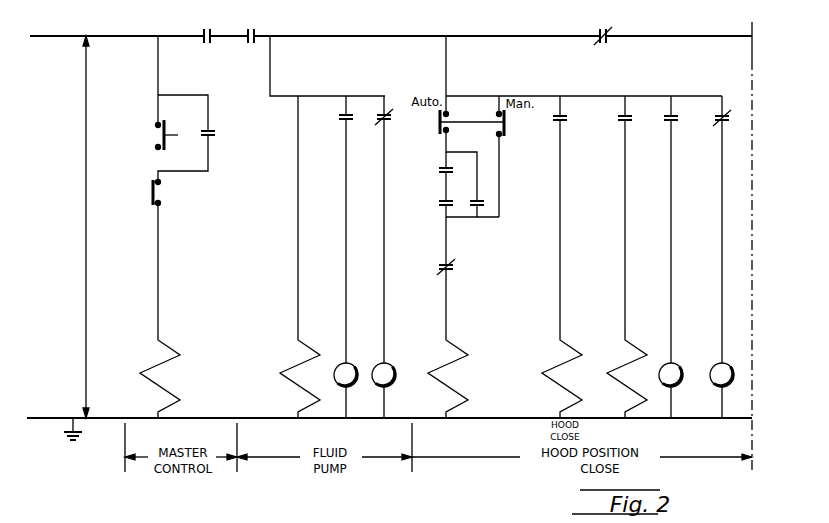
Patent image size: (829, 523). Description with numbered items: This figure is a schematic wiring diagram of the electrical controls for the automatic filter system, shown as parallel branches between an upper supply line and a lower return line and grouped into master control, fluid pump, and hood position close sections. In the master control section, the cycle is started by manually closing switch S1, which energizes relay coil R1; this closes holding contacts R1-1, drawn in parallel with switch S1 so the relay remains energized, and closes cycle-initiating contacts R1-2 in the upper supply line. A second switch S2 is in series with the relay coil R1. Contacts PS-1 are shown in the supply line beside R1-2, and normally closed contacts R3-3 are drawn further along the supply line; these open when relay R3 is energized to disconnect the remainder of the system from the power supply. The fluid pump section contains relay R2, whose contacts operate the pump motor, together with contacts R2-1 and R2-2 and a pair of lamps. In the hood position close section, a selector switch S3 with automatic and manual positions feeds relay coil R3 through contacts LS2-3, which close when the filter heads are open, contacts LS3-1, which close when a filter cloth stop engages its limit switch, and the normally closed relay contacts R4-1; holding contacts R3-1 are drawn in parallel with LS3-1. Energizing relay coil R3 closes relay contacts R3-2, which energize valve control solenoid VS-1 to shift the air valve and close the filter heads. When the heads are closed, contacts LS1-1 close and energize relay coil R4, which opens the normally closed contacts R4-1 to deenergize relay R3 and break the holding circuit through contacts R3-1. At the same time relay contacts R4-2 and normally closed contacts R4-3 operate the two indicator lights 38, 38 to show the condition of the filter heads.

The cycle-initiating contacts R1-2 is at (194, 28).
The pressure switch contact PS-1 is at (267, 28).
The normally closed contacts R3-3 is at (619, 29).
The switch S1 is at (156, 135).
The holding contacts R1-1 is at (225, 133).
The stop switch S2 is at (142, 193).
The relay coil R1 is at (161, 374).
The relay R2 is at (300, 374).
The R2-1 contact R2-1 is at (332, 126).
The R2-2 contact R2-2 is at (396, 123).
The auto/manual selector switch S3 is at (472, 126).
The contacts LS2-3 is at (428, 179).
The contacts LS3-1 is at (428, 213).
The holding contacts R3-1 is at (487, 203).
The normally closed relay contacts R4-1 is at (466, 267).
The relay coil R3 is at (448, 374).
The relay contacts R3-2 is at (544, 129).
The valve control solenoid VS-1 is at (562, 374).
The contacts LS1-1 is at (606, 128).
The relay coil R4 is at (627, 374).
The relay contacts R4-2 is at (658, 127).
The normally closed contacts R4-3 is at (710, 124).
The indicator lights 38 is at (713, 367).